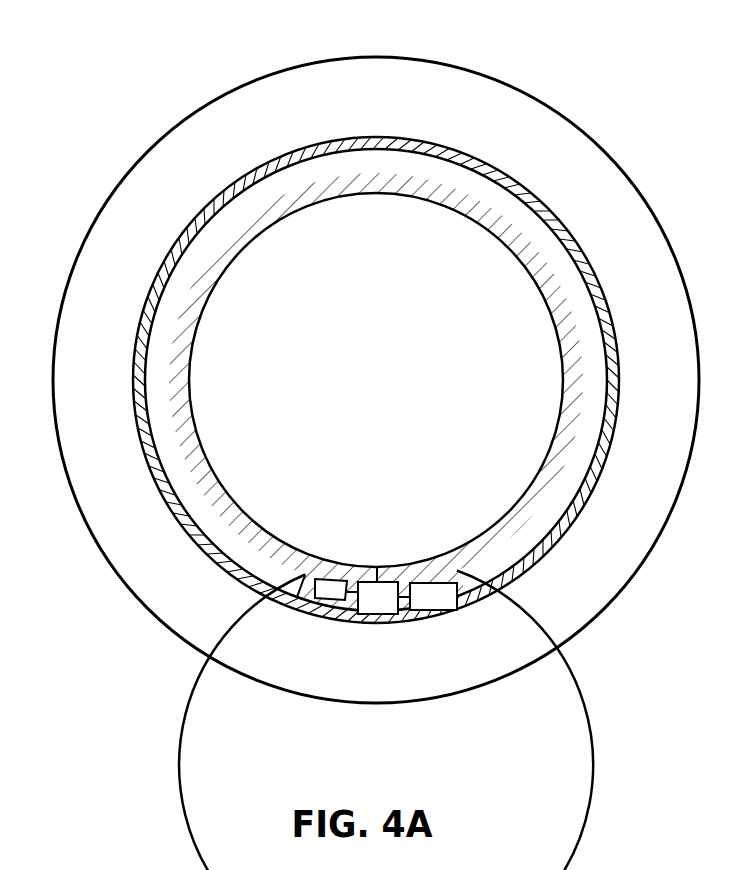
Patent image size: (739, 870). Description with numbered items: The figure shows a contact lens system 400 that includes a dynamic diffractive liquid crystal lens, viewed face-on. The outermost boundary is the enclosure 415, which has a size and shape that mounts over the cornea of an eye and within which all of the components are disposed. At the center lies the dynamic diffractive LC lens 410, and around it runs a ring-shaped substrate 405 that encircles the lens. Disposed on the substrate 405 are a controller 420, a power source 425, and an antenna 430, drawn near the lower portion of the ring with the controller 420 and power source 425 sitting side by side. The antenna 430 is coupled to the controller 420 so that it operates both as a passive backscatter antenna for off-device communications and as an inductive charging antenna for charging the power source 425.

The contact lens system 400 is at (133, 78).
The substrate 405 is at (556, 530).
The dynamic diffractive LC lens 410 is at (332, 338).
The enclosure 415 is at (96, 549).
The controller 420 is at (377, 605).
The power source 425 is at (322, 589).
The antenna 430 is at (502, 566).